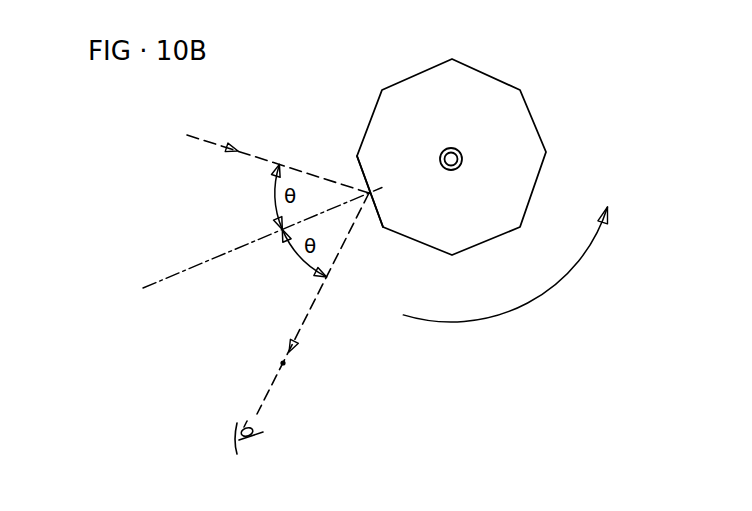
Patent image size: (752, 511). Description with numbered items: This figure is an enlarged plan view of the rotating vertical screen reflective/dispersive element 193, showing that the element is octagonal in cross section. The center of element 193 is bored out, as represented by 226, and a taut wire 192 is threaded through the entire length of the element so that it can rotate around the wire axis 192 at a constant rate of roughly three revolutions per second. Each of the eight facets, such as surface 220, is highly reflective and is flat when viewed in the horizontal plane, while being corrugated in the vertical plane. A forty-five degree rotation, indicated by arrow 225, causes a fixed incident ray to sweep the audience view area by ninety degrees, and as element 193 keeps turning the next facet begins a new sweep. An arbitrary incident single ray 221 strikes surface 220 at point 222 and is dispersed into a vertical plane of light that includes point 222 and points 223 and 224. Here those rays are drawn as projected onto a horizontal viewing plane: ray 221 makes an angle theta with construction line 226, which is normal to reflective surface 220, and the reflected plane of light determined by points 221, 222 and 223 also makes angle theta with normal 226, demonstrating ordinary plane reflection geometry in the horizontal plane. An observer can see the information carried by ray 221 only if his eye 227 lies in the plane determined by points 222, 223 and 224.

The taut wire 192 is at (455, 149).
The rotating vertical screen reflective/dispersive element 193 is at (547, 149).
The reflective surface 220 is at (378, 213).
The incident ray 221 is at (195, 138).
The point of incidence 222 is at (369, 193).
The reflected light point 223 is at (341, 303).
The reflected light point 224 is at (312, 377).
The rotation arrow 225 is at (565, 277).
The construction line 226 is at (460, 153).
The observer's eye 227 is at (241, 441).